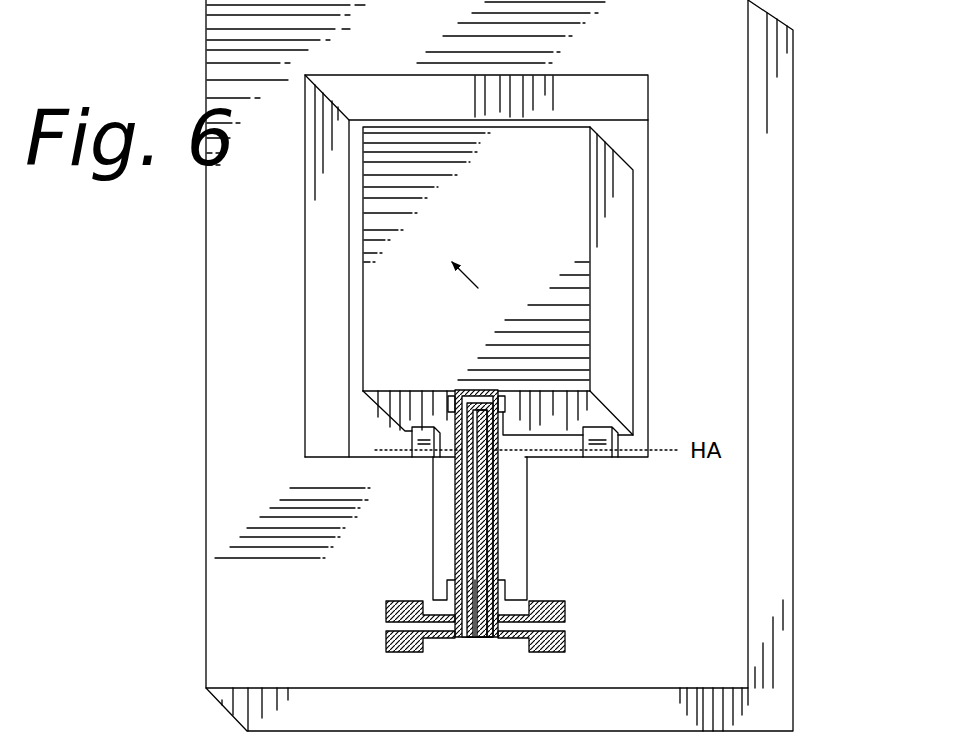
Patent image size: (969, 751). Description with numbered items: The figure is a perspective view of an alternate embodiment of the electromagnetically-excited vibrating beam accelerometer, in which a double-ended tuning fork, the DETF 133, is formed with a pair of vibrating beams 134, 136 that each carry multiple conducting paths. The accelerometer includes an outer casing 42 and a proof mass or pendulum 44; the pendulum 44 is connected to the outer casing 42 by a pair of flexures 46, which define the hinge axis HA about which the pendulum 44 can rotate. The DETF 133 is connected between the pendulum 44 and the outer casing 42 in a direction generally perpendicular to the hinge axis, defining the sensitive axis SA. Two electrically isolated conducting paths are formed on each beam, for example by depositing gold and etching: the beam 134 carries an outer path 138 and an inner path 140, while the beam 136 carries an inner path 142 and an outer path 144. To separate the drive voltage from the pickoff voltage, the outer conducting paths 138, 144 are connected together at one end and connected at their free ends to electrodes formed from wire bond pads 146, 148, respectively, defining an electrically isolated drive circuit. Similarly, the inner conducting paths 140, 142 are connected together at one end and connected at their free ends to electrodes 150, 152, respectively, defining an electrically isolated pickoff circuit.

The outer casing 42 is at (722, 183).
The pendulum 44 is at (562, 192).
The flexures 46 is at (428, 445).
The DETF 133 is at (628, 536).
The vibrating beam 134 is at (444, 543).
The vibrating beam 136 is at (510, 502).
The outer path 138 is at (458, 506).
The inner path 140 is at (456, 491).
The inner path 142 is at (495, 562).
The outer path 144 is at (495, 548).
The wire bond pad 146 is at (387, 615).
The wire bond pad 148 is at (567, 614).
The electrode 150 is at (567, 642).
The electrode 152 is at (387, 641).